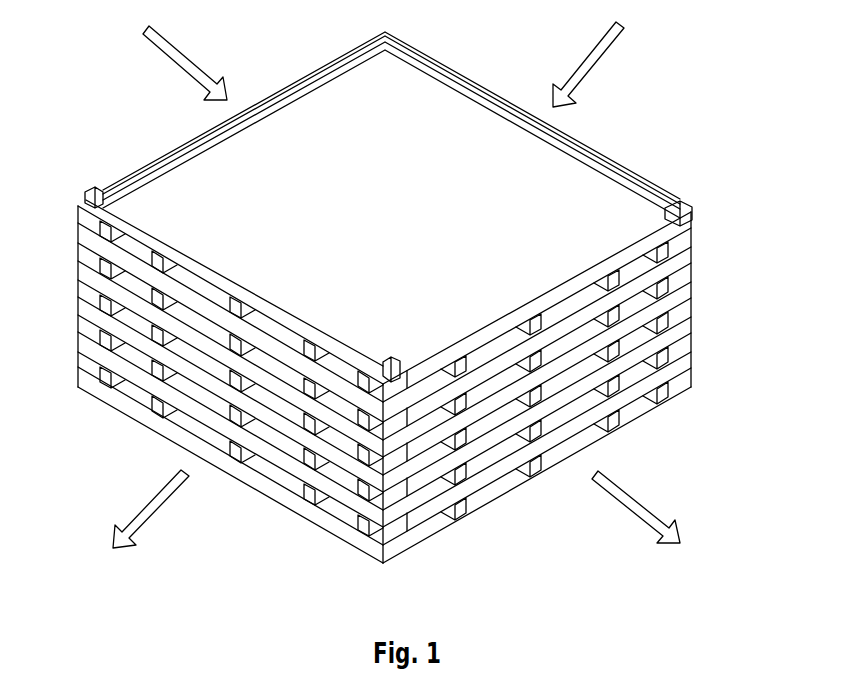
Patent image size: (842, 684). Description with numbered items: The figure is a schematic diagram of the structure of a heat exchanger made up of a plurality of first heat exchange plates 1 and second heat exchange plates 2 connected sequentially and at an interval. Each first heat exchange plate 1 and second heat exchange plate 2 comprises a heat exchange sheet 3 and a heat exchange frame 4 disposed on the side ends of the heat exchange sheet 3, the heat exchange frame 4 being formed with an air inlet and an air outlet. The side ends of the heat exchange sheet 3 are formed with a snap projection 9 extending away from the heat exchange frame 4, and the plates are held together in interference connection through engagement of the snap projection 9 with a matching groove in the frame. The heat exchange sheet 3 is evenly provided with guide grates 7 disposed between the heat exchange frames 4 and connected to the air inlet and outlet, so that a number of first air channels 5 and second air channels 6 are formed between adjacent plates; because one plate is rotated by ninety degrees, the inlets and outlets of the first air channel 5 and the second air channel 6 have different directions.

The first heat exchange plate 1 is at (296, 88).
The second heat exchange plate 2 is at (492, 356).
The heat exchange sheet 3 is at (257, 197).
The heat exchange frame 4 is at (580, 282).
The first air channel 5 is at (200, 290).
The second air channel 6 is at (443, 418).
The guide grates 7 is at (302, 458).
The snap projection 9 is at (570, 138).